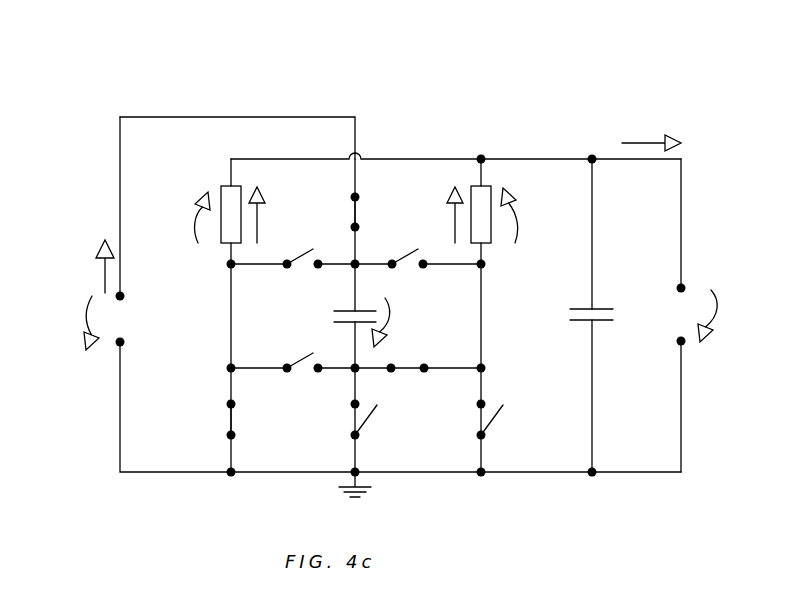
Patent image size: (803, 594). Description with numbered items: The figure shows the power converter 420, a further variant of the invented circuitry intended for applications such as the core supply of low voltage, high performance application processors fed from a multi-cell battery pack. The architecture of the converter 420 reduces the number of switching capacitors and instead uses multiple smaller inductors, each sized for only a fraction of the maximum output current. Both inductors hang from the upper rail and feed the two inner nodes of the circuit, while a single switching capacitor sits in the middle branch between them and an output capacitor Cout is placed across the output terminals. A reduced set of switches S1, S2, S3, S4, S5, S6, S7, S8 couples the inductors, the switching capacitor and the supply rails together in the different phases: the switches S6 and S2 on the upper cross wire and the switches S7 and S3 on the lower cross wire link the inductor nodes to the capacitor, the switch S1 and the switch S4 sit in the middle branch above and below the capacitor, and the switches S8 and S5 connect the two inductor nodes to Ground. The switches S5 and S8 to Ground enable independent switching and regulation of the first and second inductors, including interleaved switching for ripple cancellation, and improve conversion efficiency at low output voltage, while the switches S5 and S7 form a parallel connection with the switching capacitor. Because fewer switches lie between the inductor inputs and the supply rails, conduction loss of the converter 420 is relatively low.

The power converter circuitry 420 is at (163, 83).
The switch S1 is at (341, 212).
The switch S2 is at (408, 271).
The switch S3 is at (408, 381).
The switch S4 is at (377, 421).
The switch S5 is at (502, 421).
The switch S6 is at (303, 271).
The switch S7 is at (303, 375).
The switch S8 is at (247, 421).
The output capacitor Cout is at (562, 315).